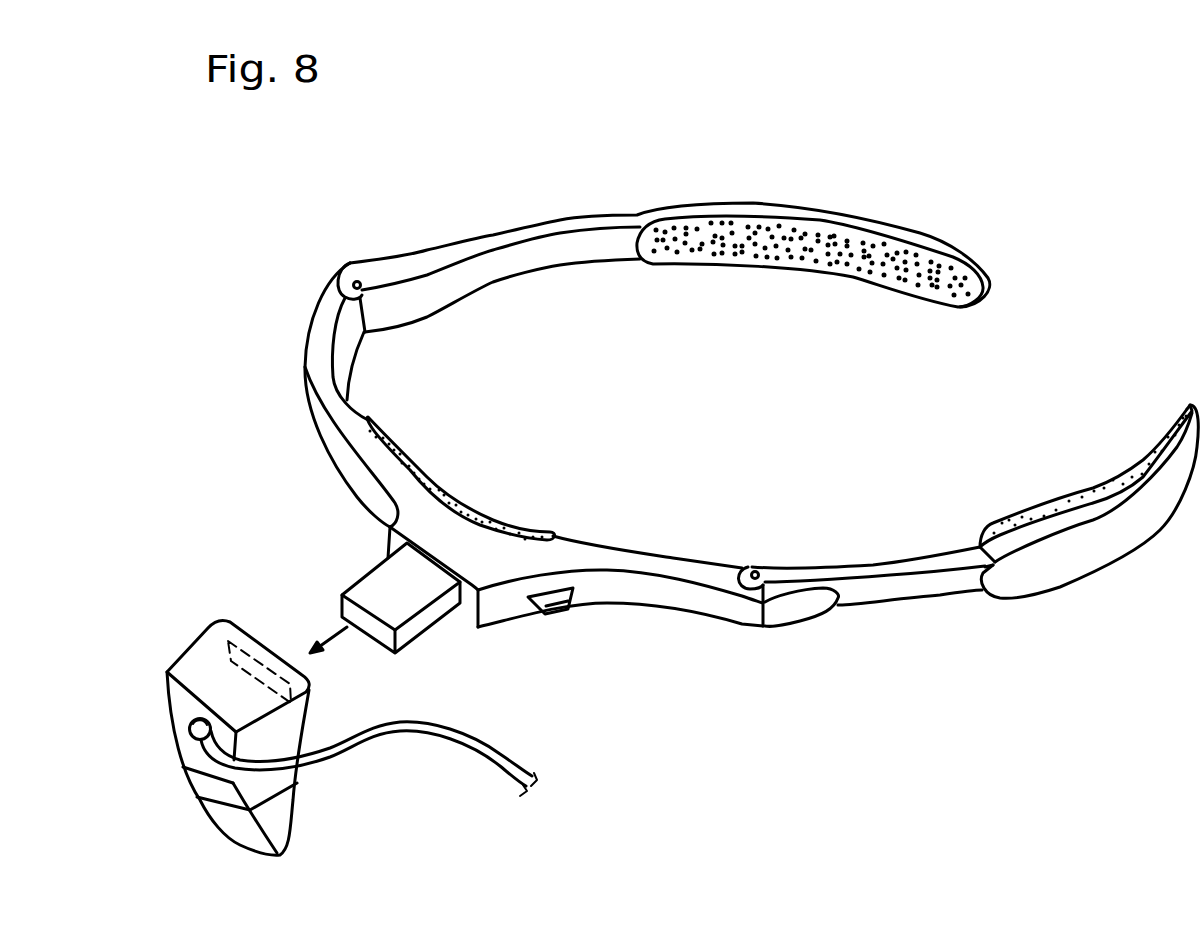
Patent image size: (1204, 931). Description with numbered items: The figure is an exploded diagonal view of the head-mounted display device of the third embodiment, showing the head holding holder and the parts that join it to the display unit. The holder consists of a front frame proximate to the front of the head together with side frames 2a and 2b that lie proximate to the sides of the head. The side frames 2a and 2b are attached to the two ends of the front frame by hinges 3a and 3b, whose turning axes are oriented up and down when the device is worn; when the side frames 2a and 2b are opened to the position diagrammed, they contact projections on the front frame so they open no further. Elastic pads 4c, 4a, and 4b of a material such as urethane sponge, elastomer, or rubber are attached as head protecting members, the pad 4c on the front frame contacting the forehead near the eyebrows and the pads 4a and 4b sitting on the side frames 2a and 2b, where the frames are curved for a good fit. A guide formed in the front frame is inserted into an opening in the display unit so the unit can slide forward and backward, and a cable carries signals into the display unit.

The side frame 2a is at (546, 220).
The side frame 2b is at (897, 552).
The hinge 3a is at (359, 280).
The hinge 3b is at (757, 570).
The pad 4a is at (757, 280).
The pad 4b is at (1080, 482).
The pad 4c is at (452, 486).